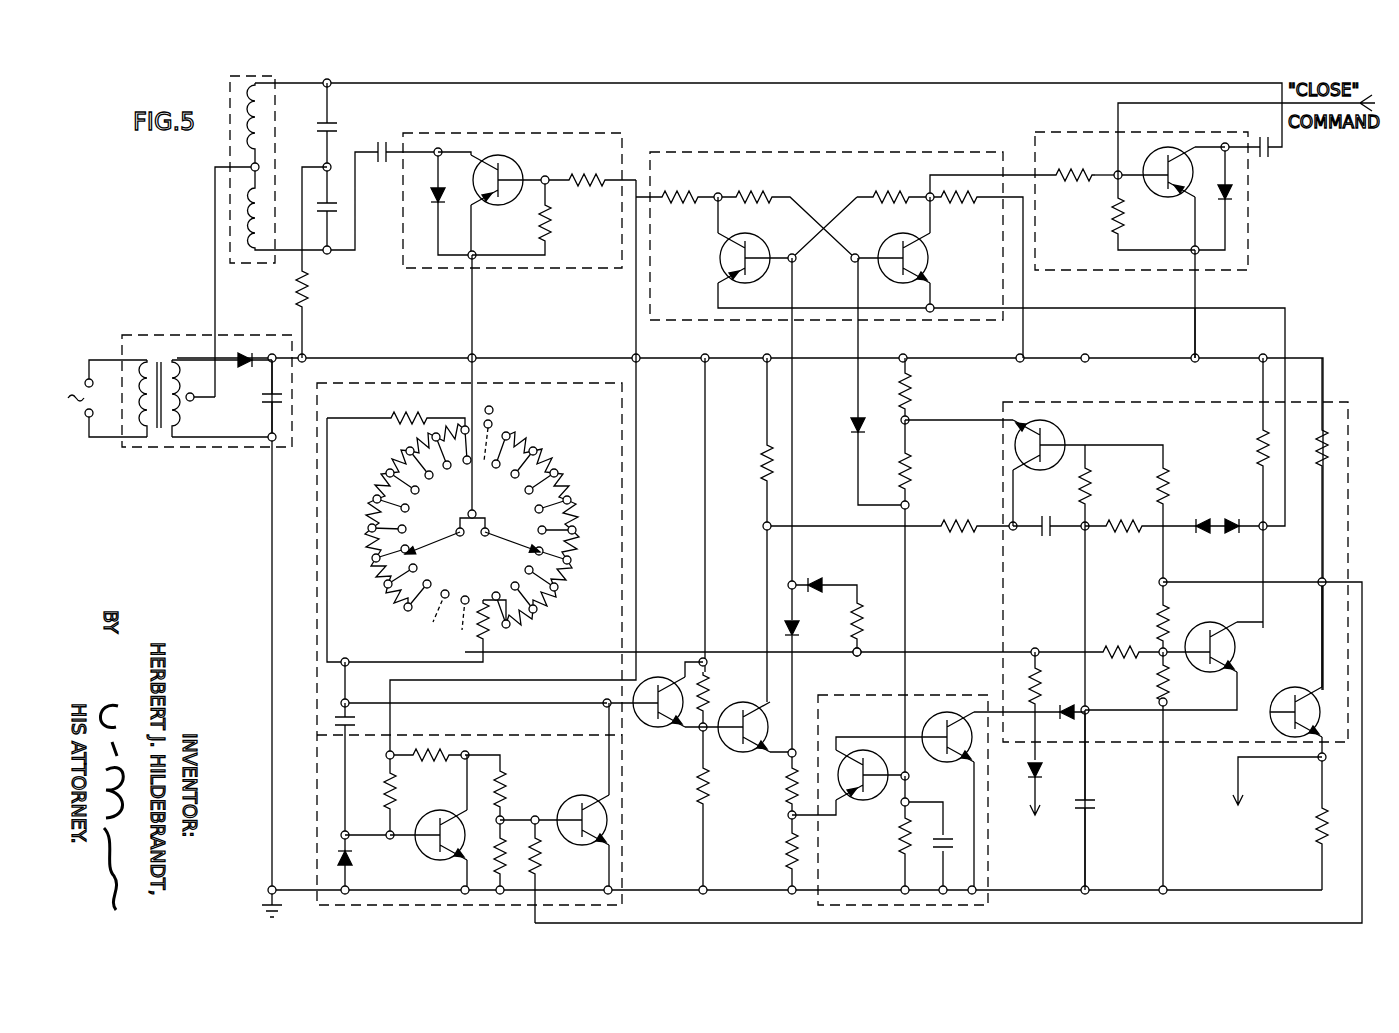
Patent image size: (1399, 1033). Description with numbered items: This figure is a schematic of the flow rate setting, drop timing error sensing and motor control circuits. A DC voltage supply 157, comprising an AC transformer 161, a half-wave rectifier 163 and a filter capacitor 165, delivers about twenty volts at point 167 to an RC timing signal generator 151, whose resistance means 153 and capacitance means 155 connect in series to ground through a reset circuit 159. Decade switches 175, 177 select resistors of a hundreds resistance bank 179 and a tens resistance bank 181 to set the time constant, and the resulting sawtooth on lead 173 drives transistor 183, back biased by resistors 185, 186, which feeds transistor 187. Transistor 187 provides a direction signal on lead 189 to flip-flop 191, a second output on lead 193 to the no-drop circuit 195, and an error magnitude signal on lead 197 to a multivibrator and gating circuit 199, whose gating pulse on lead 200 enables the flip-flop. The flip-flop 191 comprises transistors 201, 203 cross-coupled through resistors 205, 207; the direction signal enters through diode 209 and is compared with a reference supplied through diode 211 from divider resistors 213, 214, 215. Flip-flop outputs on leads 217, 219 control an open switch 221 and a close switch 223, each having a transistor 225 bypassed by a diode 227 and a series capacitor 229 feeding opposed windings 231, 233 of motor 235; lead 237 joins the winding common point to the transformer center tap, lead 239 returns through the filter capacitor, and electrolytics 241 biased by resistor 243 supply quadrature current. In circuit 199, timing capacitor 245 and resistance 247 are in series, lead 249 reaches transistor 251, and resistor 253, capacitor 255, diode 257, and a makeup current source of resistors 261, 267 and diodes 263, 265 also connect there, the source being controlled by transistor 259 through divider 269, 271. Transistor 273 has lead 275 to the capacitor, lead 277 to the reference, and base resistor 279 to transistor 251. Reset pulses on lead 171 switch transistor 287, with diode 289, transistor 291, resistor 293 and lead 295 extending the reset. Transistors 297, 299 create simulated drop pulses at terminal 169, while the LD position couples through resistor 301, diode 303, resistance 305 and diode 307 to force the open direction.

The RC timing signal generator circuit 151 is at (315, 570).
The resistance means 153 is at (564, 438).
The capacitance means 155 is at (330, 720).
The DC voltage supply 157 is at (160, 333).
The reset circuit 159 is at (315, 790).
The AC transformer 161 is at (163, 362).
The half-wave rectifier 163 is at (245, 368).
The filter capacitor 165 is at (262, 398).
The point 167 is at (475, 356).
The terminal 169 is at (1235, 800).
The lead 171 is at (1235, 922).
The lead 173 is at (503, 704).
The decade switch 175 is at (445, 550).
The decade switch 177 is at (510, 550).
The hundreds resistance bank 179 is at (380, 472).
The tens resistance bank 181 is at (547, 482).
The transistor 183 is at (648, 730).
The resistor 185 is at (710, 698).
The resistor 186 is at (688, 800).
The transistor 187 is at (737, 752).
The lead 189 is at (795, 676).
The flip-flop 191 is at (712, 322).
The lead 193 is at (838, 815).
The no-drop triggering circuit 195 is at (922, 695).
The lead 197 is at (810, 530).
The variable one-shot multivibrator and gating circuit 199 is at (1003, 600).
The lead 200 is at (1283, 330).
The transistor 201 is at (720, 262).
The transistor 203 is at (928, 262).
The resistor 205 is at (745, 192).
The resistor 207 is at (903, 194).
The diode 209 is at (800, 630).
The diode 211 is at (855, 422).
The resistor 213 is at (910, 390).
The resistor 214 is at (910, 470).
The resistor 215 is at (900, 845).
The lead 217 is at (636, 162).
The lead 219 is at (1012, 170).
The open switch 221 is at (500, 133).
The close switch 223 is at (1095, 130).
The transistor 225 is at (512, 165).
The diode 227 is at (435, 200).
The capacitor 229 is at (383, 165).
The motor winding 231 is at (248, 100).
The motor winding 233 is at (248, 220).
The motor 235 is at (250, 268).
The lead 237 is at (215, 270).
The lead 239 is at (473, 308).
The electrolytic capacitors 241 is at (337, 200).
The biasing resistor 243 is at (310, 290).
The timing capacitor 245 is at (1045, 540).
The resistance element 247 is at (958, 532).
The lead 249 is at (1085, 614).
The transistor 251 is at (1290, 692).
The resistor 253 is at (1092, 484).
The capacitor 255 is at (1097, 806).
The diode 257 is at (1062, 702).
The transistor 259 is at (1200, 634).
The resistor 261 is at (1125, 540).
The diode 263 is at (1203, 538).
The zener diode 265 is at (1232, 538).
The resistor 267 is at (1255, 446).
The resistor 269 is at (1155, 624).
The resistor 271 is at (1172, 690).
The transistor 273 is at (1060, 420).
The lead 275 is at (1015, 488).
The lead 277 is at (972, 425).
The resistor 279 is at (1170, 478).
The switching transistor 287 is at (575, 797).
The diode 289 is at (353, 862).
The transistor 291 is at (448, 812).
The resistor 293 is at (385, 792).
The lead 295 is at (520, 820).
The transistor 297 is at (873, 805).
The transistor 299 is at (938, 765).
The resistor 301 is at (862, 628).
The diode 303 is at (824, 582).
The resistance 305 is at (837, 672).
The diode 307 is at (1022, 776).